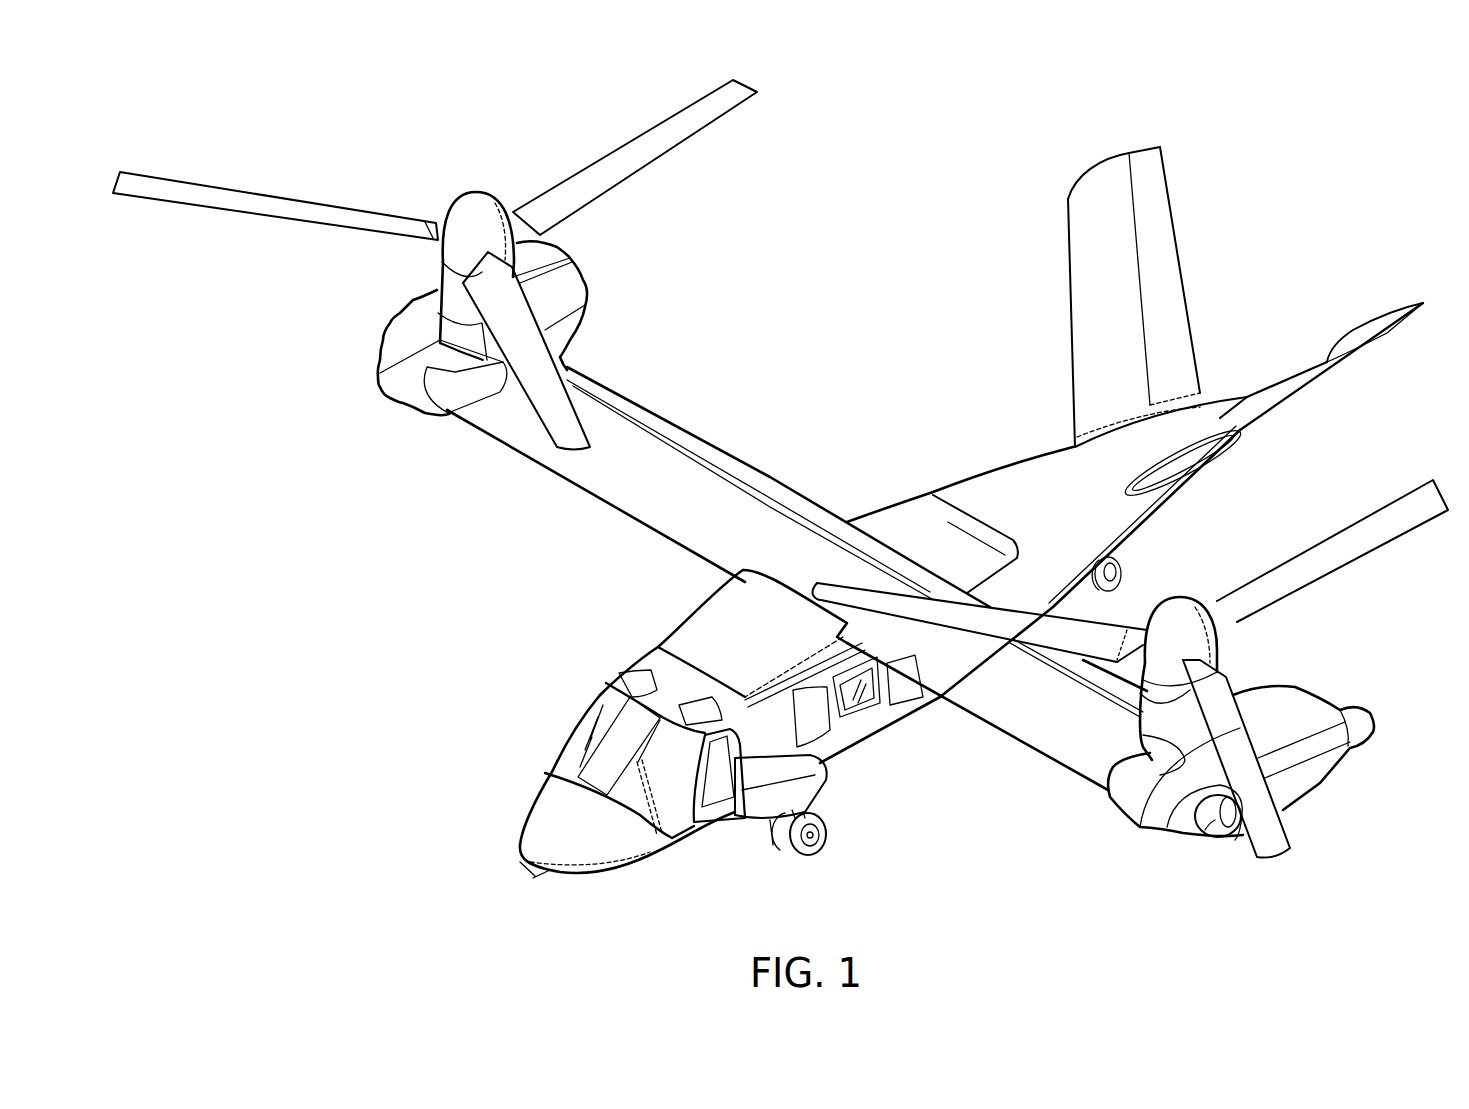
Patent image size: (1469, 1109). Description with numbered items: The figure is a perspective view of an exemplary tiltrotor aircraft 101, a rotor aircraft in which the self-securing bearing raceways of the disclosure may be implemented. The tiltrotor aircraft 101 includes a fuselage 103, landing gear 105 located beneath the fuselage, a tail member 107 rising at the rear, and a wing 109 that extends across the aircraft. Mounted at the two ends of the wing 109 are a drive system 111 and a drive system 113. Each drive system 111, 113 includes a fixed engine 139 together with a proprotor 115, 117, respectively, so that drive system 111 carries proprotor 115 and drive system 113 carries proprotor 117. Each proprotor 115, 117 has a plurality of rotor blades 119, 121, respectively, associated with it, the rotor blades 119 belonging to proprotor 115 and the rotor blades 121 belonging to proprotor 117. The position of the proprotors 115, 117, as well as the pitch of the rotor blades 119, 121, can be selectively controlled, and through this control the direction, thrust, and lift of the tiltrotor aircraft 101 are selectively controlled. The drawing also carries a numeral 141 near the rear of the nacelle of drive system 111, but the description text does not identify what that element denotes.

The tiltrotor aircraft 101 is at (1258, 128).
The fuselage 103 is at (603, 873).
The landing gear 105 is at (813, 850).
The tail member 107 is at (1179, 249).
The wing 109 is at (1010, 738).
The drive system 111 is at (1132, 873).
The drive system 113 is at (364, 264).
The proprotor 115 is at (1220, 660).
The proprotor 117 is at (474, 190).
The rotor blades 119 is at (1408, 528).
The rotor blades 121 is at (620, 143).
The fixed engine 139 is at (1323, 787).
The exhaust 141 is at (1207, 835).